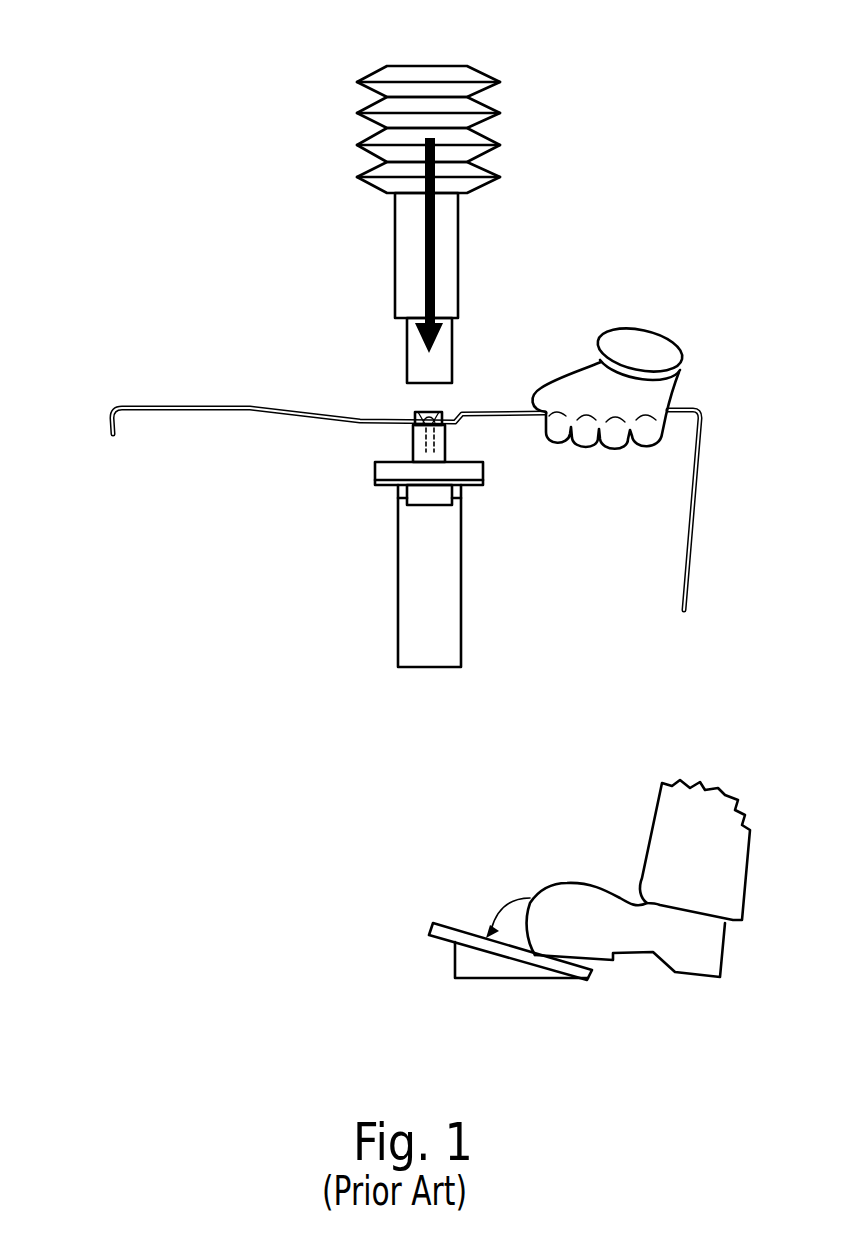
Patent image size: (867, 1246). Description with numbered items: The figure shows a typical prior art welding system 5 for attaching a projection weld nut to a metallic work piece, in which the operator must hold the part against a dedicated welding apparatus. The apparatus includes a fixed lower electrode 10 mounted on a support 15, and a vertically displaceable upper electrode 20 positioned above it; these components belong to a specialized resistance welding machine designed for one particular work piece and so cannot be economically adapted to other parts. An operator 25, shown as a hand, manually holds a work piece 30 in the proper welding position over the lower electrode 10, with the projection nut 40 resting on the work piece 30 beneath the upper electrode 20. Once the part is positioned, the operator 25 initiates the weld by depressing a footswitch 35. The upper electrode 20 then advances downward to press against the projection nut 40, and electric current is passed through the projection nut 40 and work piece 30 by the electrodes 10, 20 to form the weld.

The welding system 5 is at (152, 74).
The fixed lower electrode 10 is at (372, 452).
The support 15 is at (461, 552).
The upper electrode 20 is at (405, 350).
The operator 25 is at (664, 348).
The work piece 30 is at (190, 408).
The footswitch 35 is at (462, 960).
The projection nut 40 is at (413, 416).